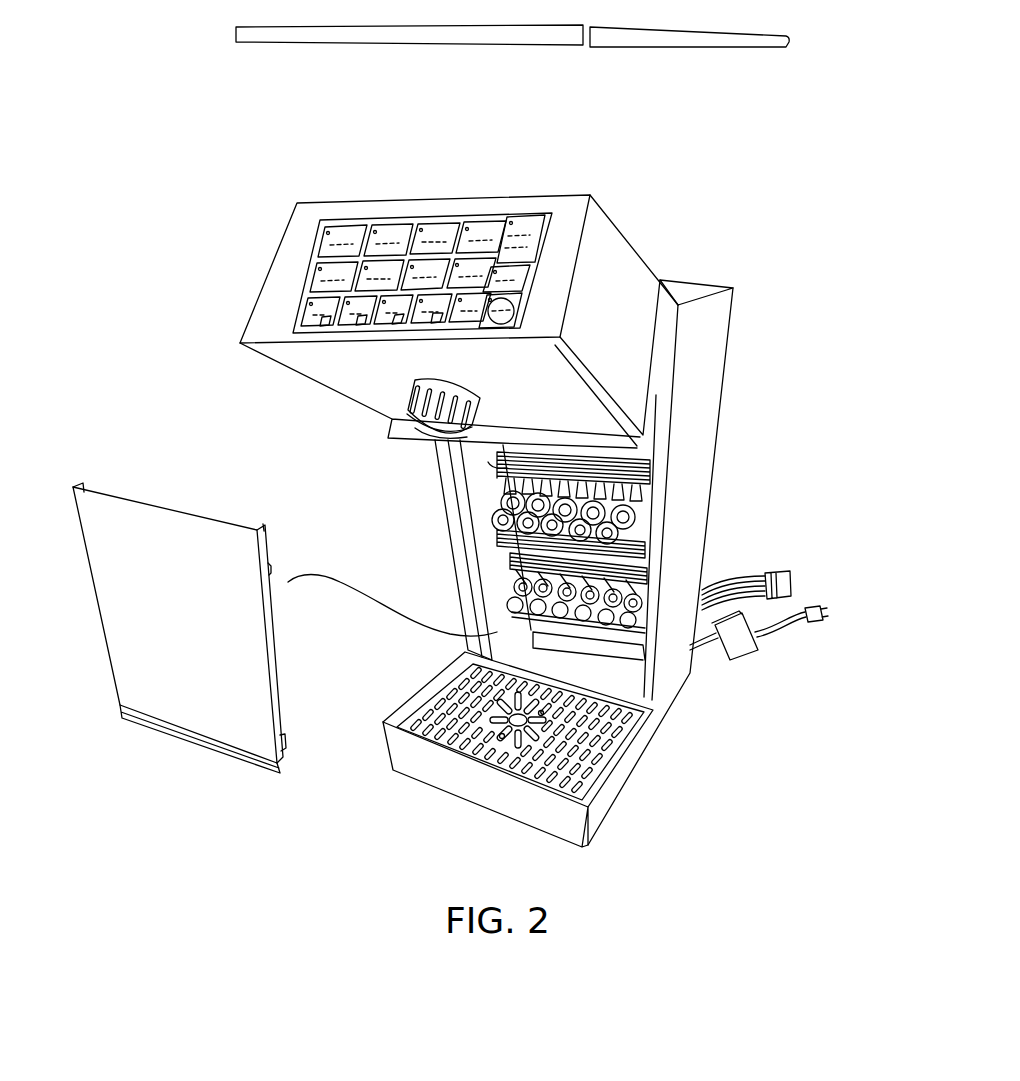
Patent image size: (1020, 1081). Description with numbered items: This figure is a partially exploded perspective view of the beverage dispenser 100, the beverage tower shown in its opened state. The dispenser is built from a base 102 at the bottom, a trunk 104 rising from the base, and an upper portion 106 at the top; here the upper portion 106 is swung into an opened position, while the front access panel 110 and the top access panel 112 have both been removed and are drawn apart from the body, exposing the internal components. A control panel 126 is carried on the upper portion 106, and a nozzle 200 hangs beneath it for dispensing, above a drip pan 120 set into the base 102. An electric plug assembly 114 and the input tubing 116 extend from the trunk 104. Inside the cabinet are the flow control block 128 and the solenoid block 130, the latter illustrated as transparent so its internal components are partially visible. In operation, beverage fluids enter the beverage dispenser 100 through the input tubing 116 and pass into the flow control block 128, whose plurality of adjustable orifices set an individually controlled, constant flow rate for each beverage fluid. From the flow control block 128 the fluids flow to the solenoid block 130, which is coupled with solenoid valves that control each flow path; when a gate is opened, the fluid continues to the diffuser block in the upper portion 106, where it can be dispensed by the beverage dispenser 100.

The beverage dispenser 100 is at (694, 741).
The base 102 is at (534, 749).
The trunk 104 is at (703, 352).
The upper portion 106 is at (454, 321).
The front access panel 110 is at (133, 640).
The top access panel 112 is at (710, 48).
The electric plug assembly 114 is at (742, 660).
The input tubing 116 is at (730, 587).
The drip pan 120 is at (583, 773).
The control panel 126 is at (292, 283).
The flow control block 128 is at (510, 570).
The solenoid block 130 is at (645, 512).
The nozzle 200 is at (430, 427).